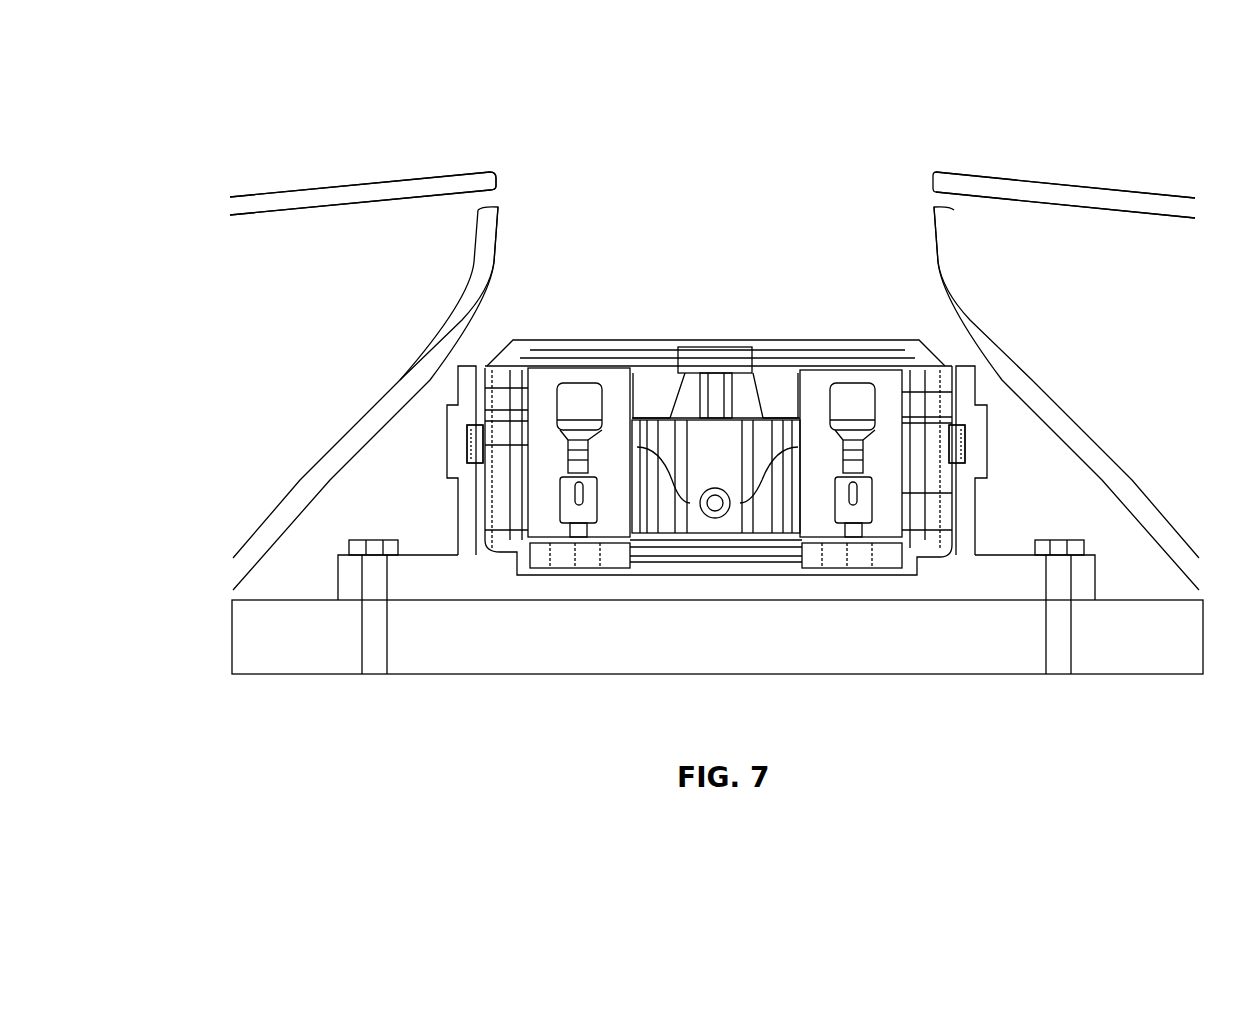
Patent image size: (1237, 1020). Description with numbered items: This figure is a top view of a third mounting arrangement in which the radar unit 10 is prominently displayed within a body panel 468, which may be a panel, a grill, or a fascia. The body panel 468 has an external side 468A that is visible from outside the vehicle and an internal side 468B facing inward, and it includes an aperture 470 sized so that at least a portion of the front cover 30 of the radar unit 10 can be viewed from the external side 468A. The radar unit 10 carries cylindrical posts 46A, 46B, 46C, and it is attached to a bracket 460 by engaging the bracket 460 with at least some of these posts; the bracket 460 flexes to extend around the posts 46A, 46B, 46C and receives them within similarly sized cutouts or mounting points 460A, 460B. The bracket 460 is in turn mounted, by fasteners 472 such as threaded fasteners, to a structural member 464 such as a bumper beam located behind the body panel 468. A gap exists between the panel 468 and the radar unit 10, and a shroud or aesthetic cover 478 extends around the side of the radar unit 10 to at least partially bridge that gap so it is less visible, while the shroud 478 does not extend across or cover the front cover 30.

The radar unit 10 is at (760, 304).
The front cover 30 is at (600, 340).
The cylindrical post 46A is at (965, 437).
The cylindrical post 46B is at (467, 435).
The cylindrical post 46C is at (715, 489).
The bracket 460 is at (970, 522).
The cutout or mounting point 460A is at (965, 460).
The cutout or mounting point 460B is at (467, 455).
The structural member 464 is at (855, 662).
The body panel 468 is at (308, 190).
The external side 468A is at (237, 193).
The internal side 468B is at (290, 217).
The aperture 470 is at (495, 180).
The fastener 472 is at (380, 647).
The shroud or aesthetic cover 478 is at (290, 493).